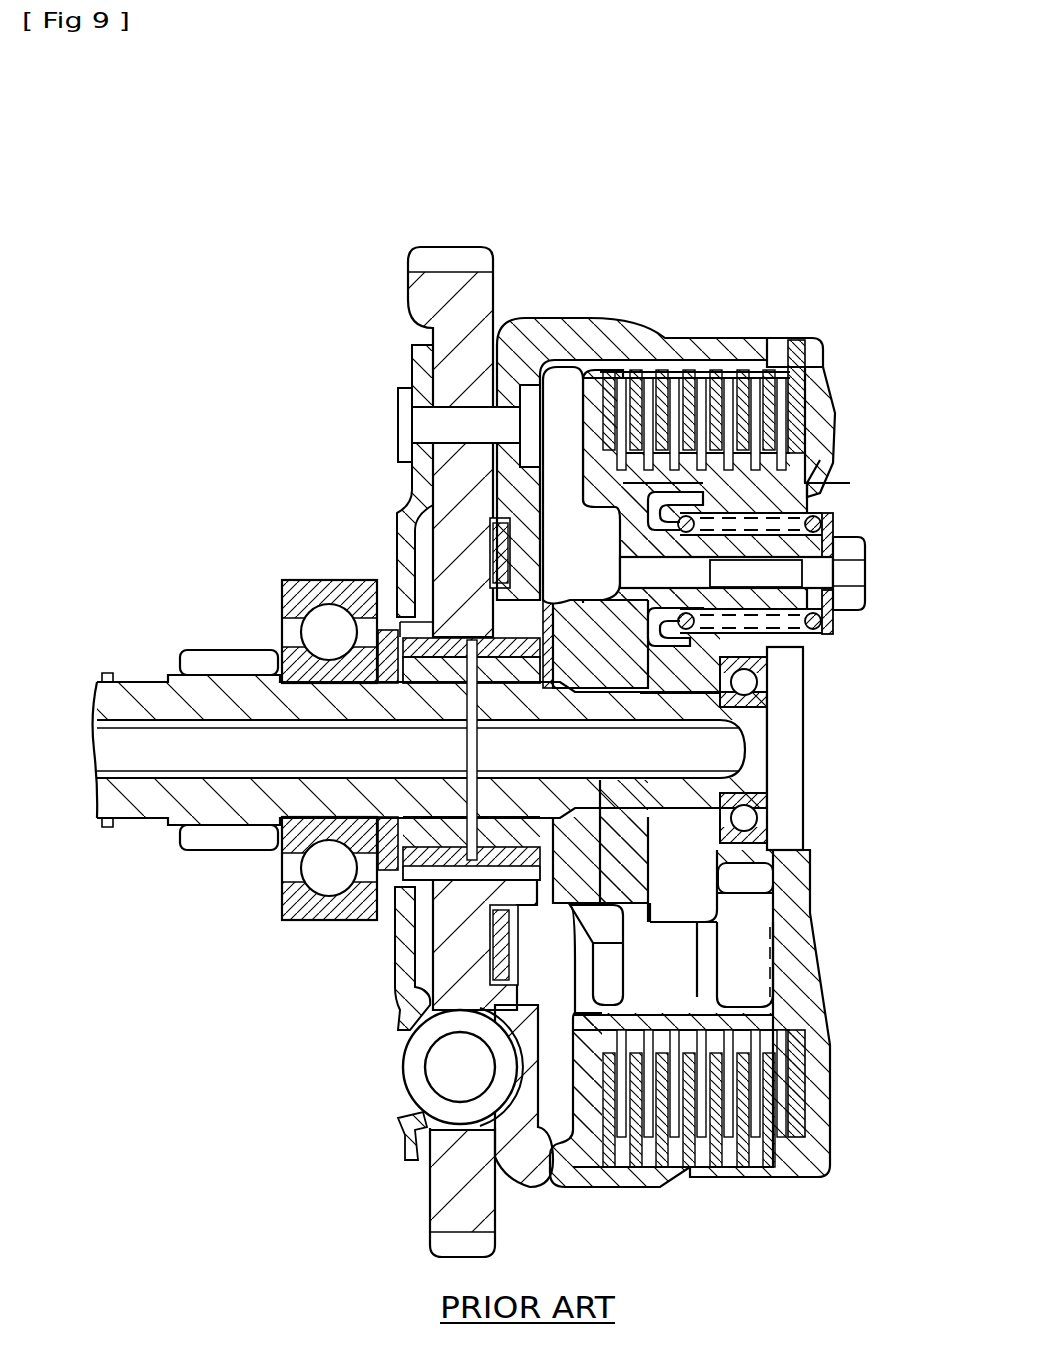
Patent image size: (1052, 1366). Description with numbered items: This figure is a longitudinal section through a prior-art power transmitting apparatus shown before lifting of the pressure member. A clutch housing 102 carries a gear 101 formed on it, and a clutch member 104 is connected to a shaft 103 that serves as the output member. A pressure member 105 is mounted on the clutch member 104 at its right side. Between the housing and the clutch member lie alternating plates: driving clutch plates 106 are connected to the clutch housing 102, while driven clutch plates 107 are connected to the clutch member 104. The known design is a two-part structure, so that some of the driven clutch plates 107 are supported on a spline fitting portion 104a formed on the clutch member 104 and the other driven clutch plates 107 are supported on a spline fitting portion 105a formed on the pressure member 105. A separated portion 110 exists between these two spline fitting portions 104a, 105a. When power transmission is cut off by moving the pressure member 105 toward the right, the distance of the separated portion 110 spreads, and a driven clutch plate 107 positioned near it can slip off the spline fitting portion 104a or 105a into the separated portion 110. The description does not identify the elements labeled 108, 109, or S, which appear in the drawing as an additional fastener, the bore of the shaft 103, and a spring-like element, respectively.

The gear 101 is at (428, 296).
The clutch housing 102 is at (590, 325).
The shaft 103 is at (140, 700).
The clutch member 104 is at (580, 472).
The spline fitting portion 104a is at (735, 1045).
The pressure member 105 is at (830, 430).
The spline fitting portion 105a is at (790, 1045).
The driving clutch plates 106 is at (720, 378).
The driven clutch plates 107 is at (652, 378).
The bolt 108 is at (400, 408).
The shaft bore 109 is at (157, 755).
The separated portion 110 is at (776, 480).
The spring S is at (787, 627).